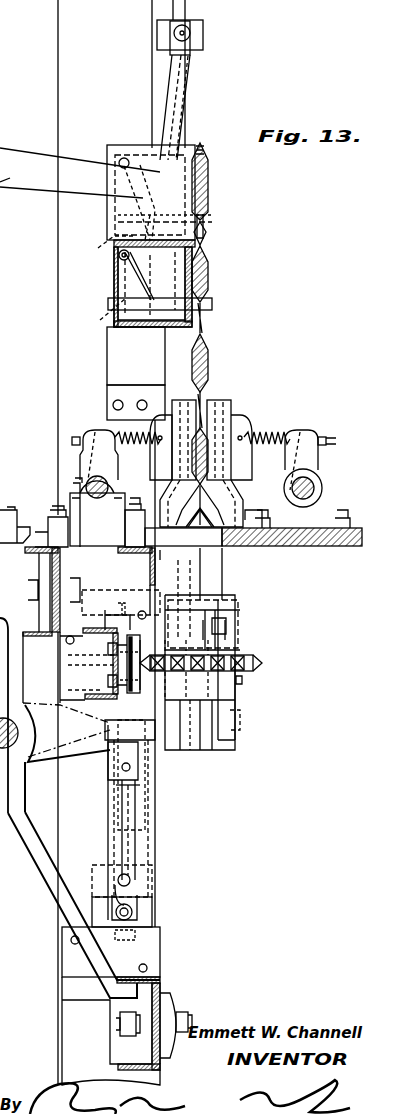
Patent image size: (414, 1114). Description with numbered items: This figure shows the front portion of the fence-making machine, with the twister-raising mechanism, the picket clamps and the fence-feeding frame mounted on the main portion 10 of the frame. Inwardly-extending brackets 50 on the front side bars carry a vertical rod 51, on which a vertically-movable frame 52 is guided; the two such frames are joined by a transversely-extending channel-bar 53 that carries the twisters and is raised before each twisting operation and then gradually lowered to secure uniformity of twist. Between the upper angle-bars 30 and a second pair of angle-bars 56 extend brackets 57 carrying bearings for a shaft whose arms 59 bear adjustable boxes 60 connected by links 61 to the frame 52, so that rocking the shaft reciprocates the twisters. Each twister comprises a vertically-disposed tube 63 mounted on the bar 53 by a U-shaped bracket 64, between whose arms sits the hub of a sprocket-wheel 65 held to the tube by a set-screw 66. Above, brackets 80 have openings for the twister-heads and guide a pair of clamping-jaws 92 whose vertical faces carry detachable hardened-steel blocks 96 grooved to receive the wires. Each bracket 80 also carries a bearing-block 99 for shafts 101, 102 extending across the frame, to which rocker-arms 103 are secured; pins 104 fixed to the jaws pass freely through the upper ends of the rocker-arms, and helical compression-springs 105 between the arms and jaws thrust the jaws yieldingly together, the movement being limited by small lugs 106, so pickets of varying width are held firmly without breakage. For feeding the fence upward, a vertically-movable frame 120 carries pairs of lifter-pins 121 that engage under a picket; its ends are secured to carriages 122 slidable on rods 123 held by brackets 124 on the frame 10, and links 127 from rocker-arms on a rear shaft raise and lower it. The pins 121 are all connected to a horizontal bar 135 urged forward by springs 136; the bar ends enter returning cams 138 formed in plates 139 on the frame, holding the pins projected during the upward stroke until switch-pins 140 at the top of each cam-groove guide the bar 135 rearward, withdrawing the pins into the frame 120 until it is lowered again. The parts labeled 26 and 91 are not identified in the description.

The main frame section 10 is at (76, 87).
The arm 26 is at (80, 180).
The angle-bars 30 is at (126, 1063).
The brackets 50 is at (150, 940).
The vertical rod 51 is at (150, 920).
The vertically-movable frame 52 is at (140, 838).
The channel-bar 53 is at (85, 648).
The angle-bars 56 is at (27, 550).
The brackets 57 is at (25, 836).
The arms 59 is at (90, 758).
The adjustable boxes 60 is at (140, 760).
The links 61 is at (128, 823).
The twister-tube 63 is at (214, 554).
The U-shaped bracket 64 is at (122, 665).
The sprocket-wheel 65 is at (250, 668).
The set-screw 66 is at (240, 684).
The brackets 80 is at (321, 548).
The wall 91 is at (150, 563).
The clamping-jaws 92 is at (162, 502).
The detachable blocks 96 is at (214, 420).
The bearing-block 99 is at (72, 512).
The shaft 101 is at (97, 498).
The shaft 102 is at (316, 496).
The rocker-arms 103 is at (310, 478).
The pins 104 is at (328, 443).
The helical compression-springs 105 is at (202, 429).
The pins or lugs 106 is at (330, 427).
The vertically-movable frame 120 is at (121, 330).
The lifter-pins 121 is at (205, 221).
The carriages 122 is at (206, 240).
The rods 123 is at (183, 12).
The brackets 124 is at (185, 98).
The links 127 is at (173, 86).
The bar 135 is at (163, 297).
The springs 136 is at (136, 276).
The returning cams 138 is at (110, 274).
The plates 139 is at (136, 398).
The switch-pins 140 is at (108, 209).